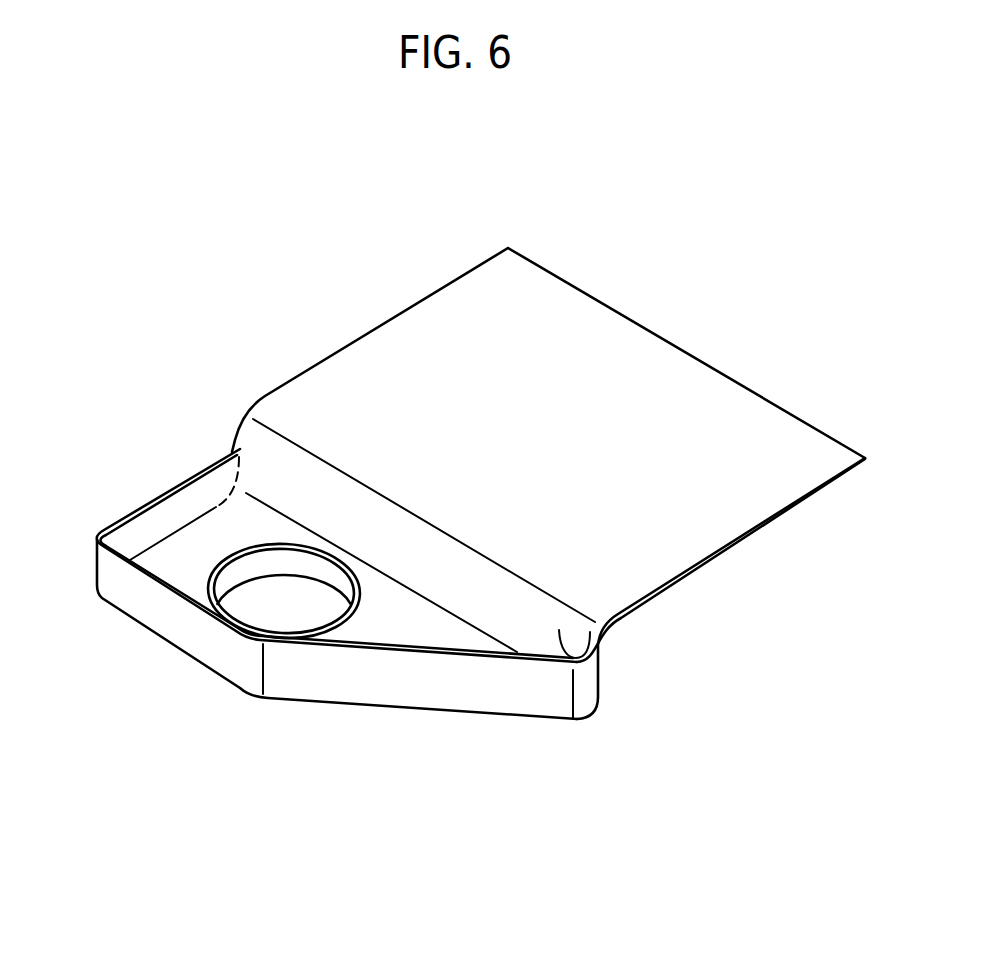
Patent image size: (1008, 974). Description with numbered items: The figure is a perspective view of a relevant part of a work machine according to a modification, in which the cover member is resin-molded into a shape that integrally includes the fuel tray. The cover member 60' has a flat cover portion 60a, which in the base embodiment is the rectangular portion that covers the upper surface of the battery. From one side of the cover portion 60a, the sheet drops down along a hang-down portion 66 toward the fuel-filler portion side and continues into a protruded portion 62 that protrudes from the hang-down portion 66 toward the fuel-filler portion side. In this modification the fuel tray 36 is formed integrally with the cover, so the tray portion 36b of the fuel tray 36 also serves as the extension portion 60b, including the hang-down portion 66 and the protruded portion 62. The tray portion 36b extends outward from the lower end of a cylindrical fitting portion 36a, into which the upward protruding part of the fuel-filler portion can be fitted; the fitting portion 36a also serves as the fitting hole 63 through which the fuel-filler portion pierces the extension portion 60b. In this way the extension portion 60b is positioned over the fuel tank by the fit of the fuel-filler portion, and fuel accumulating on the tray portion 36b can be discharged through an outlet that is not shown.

The cover member 60' is at (548, 459).
The cover portion 60a is at (743, 418).
The hang-down portion 66 is at (592, 660).
The fuel tray 36 is at (181, 432).
The tray portion 36b is at (162, 553).
The extension portion 60b is at (313, 548).
The fitting portion 36a is at (350, 628).
The fitting hole 63 is at (311, 674).
The protruded portion 62 is at (427, 632).